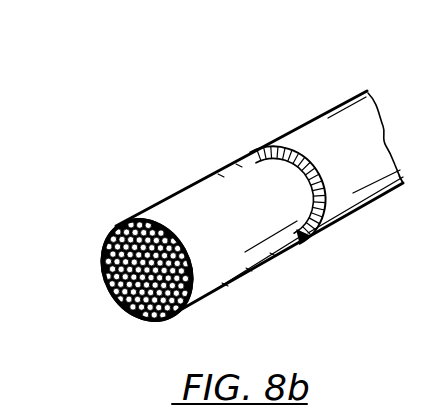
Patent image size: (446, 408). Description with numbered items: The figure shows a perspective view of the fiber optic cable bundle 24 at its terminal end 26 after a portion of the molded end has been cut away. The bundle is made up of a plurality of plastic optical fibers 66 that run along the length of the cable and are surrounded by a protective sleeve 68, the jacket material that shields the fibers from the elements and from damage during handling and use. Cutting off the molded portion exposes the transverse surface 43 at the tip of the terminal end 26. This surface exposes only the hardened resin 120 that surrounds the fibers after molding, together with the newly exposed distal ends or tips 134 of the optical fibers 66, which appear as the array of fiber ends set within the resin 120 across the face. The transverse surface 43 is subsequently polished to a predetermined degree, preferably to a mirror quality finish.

The fiber optic cable bundle 24 is at (368, 93).
The terminal end 26 is at (262, 265).
The transverse surface 43 is at (101, 281).
The plastic optical fibers 66 is at (155, 237).
The protective sleeve 68 is at (318, 118).
The resin 120 is at (205, 179).
The distal ends or tips of the optical fibers 134 is at (134, 316).